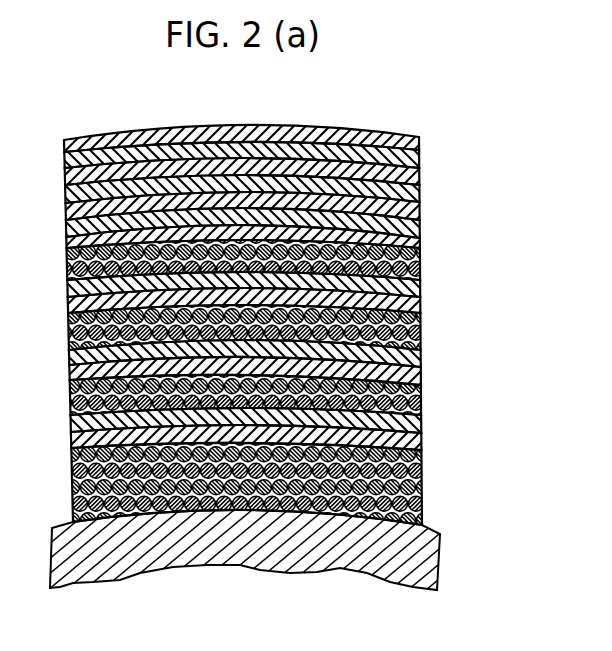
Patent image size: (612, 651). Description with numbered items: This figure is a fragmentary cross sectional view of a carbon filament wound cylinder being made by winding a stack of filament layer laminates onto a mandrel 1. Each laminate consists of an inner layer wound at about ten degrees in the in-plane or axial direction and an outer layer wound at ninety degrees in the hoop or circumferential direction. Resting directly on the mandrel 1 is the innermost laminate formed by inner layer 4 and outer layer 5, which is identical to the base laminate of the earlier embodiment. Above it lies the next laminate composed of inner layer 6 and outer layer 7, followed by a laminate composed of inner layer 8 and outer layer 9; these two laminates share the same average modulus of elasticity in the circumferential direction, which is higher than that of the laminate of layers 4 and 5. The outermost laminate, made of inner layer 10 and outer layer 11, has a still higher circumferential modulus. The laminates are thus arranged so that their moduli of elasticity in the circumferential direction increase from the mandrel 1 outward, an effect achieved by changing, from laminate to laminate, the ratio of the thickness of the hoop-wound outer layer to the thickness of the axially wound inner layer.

The mandrel 1 is at (267, 548).
The inner layer 4 is at (415, 482).
The outer layer 5 is at (415, 430).
The inner layer 6 is at (415, 398).
The outer layer 7 is at (415, 360).
The inner layer 8 is at (416, 330).
The outer layer 9 is at (416, 293).
The inner layer 10 is at (417, 258).
The outer layer 11 is at (415, 192).